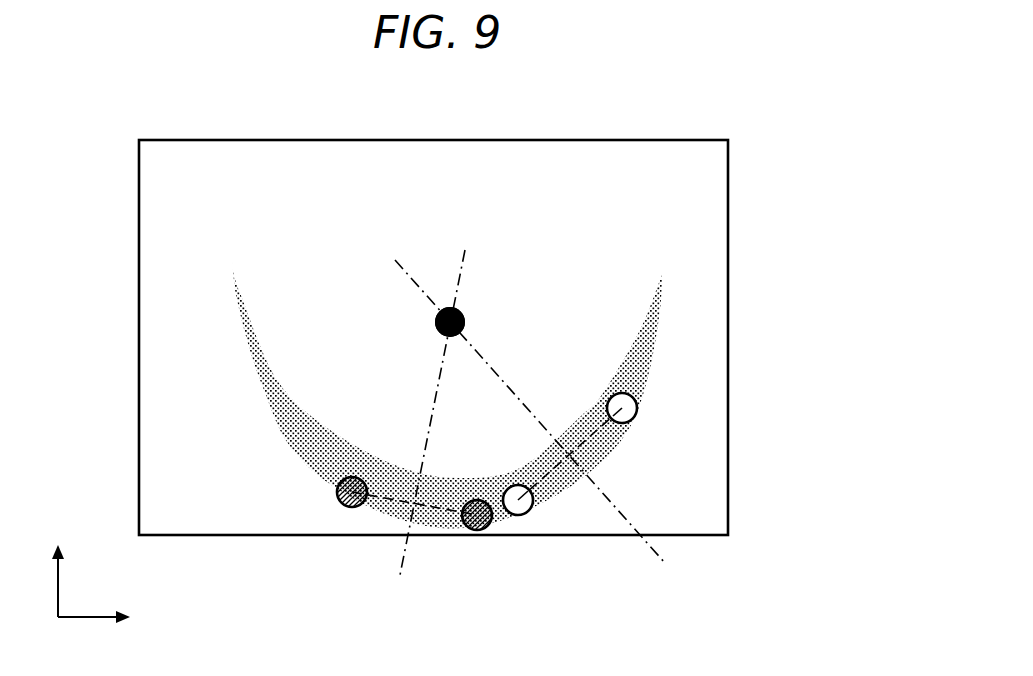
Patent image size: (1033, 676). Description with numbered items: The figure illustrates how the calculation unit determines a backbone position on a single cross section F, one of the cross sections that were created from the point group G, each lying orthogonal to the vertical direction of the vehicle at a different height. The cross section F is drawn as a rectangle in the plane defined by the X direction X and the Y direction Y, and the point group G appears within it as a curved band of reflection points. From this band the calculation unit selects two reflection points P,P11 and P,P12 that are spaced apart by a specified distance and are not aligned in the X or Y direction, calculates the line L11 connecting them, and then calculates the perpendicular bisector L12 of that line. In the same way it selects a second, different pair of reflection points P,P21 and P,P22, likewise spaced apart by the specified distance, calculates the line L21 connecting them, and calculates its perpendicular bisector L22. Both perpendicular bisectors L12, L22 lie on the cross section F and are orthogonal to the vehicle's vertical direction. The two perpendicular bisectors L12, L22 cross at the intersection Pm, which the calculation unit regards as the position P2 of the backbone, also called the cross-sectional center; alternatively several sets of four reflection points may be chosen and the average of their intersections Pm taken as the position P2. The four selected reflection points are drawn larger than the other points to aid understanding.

The cross section F is at (681, 140).
The point group G is at (240, 324).
The intersection Pm is at (435, 323).
The position of the backbone P2 is at (446, 307).
The reflection point P,P11 is at (344, 504).
The reflection point P,P12 is at (484, 530).
The reflection point P,P21 is at (530, 514).
The reflection point P,P22 is at (637, 408).
The line L11 is at (363, 505).
The perpendicular bisector L12 is at (402, 562).
The line L21 is at (558, 465).
The perpendicular bisector L22 is at (650, 555).
The X direction X is at (104, 619).
The Y direction Y is at (57, 565).